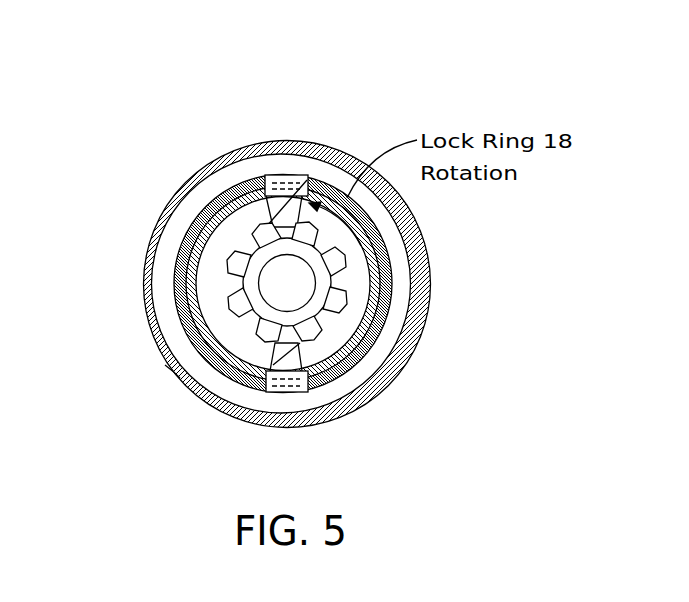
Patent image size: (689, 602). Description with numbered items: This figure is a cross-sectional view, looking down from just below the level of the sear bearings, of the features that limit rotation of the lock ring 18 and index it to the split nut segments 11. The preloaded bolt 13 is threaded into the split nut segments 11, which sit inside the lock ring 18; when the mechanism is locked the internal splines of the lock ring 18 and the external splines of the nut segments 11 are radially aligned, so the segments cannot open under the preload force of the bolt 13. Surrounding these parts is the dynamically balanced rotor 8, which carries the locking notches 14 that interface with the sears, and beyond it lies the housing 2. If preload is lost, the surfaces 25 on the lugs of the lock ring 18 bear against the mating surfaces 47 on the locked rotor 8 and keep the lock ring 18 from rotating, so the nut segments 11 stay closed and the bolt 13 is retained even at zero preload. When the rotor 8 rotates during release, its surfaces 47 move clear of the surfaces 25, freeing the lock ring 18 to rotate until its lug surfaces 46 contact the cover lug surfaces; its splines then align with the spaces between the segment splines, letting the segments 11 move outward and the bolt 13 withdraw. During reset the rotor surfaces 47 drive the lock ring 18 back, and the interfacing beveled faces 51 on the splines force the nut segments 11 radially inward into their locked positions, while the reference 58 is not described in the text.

The housing 2 is at (228, 150).
The dynamically balanced rotor 8 is at (377, 410).
The split nut segments 11 is at (372, 362).
The bolt 13 is at (302, 284).
The locking notches 14 is at (177, 290).
The lock ring 18 is at (220, 195).
The surfaces on lugs of the lock ring 25 is at (280, 176).
The lug surfaces 46 is at (305, 184).
The reset surfaces 47 is at (265, 176).
The beveled faces 51 is at (390, 252).
The opening 58 is at (173, 370).